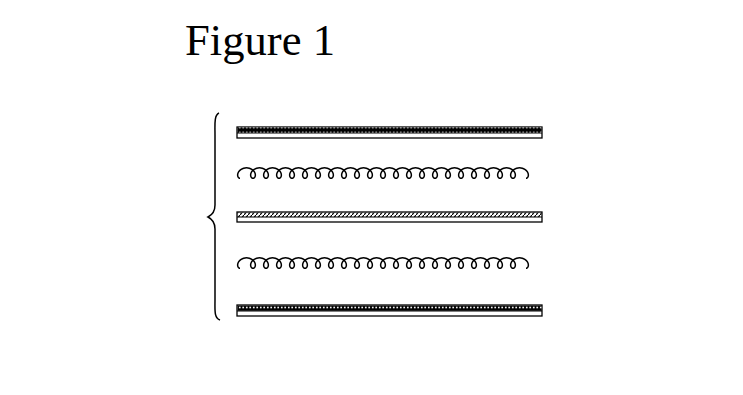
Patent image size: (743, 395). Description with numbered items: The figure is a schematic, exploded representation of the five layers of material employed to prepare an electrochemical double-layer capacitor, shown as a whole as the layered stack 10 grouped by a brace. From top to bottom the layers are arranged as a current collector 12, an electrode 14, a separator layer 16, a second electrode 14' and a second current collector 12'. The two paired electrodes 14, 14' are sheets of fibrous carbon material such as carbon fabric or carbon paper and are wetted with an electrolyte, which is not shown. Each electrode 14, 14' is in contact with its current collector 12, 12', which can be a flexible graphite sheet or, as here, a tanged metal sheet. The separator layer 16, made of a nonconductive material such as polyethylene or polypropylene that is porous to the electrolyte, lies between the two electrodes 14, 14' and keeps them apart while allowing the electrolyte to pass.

The multilayer laminate structure 10 is at (187, 216).
The current collector 12 is at (426, 113).
The electrode 14 is at (432, 157).
The separator layer 16 is at (542, 215).
The electrode 14' is at (438, 249).
The current collector 12' is at (438, 303).